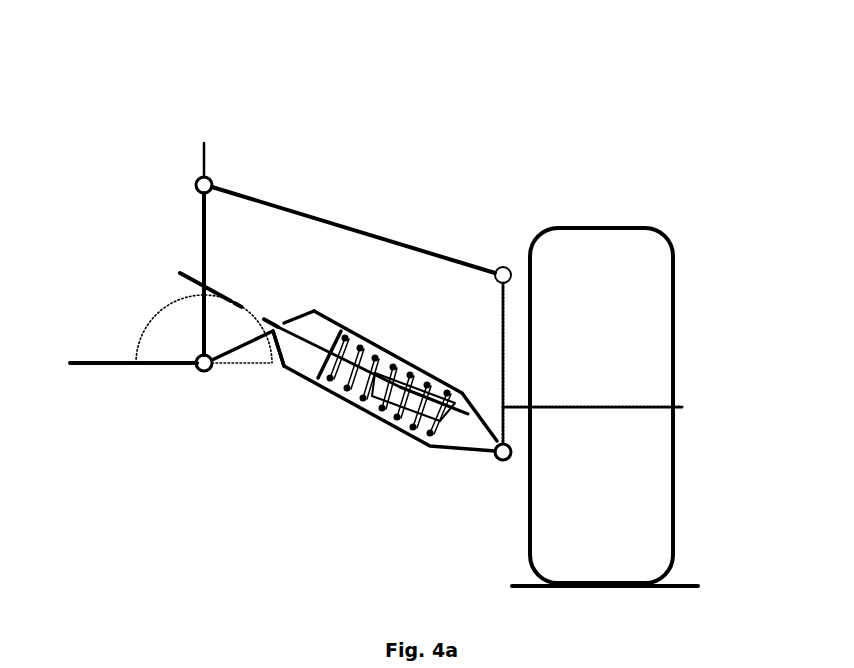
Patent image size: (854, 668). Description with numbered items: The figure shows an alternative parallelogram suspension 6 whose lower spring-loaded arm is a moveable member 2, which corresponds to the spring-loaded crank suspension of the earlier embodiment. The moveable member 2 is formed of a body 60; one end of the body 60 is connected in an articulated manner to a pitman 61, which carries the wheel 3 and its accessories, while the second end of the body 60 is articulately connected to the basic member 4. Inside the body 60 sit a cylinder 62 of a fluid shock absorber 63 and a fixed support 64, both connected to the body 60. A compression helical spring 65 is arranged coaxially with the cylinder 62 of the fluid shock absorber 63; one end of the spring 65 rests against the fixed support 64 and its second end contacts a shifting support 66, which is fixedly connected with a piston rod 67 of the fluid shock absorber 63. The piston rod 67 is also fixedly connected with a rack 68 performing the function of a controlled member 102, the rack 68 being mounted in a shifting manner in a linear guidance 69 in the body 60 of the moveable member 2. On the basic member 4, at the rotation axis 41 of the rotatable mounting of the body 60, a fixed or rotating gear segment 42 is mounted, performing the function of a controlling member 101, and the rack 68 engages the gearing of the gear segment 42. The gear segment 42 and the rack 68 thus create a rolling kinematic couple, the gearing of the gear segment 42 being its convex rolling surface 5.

The moveable member 2 is at (524, 306).
The wheel 3 is at (645, 338).
The basic member 4 is at (122, 367).
The convex rolling surface 5 is at (168, 254).
The parallelogram suspension 6 is at (524, 306).
The rotation axis 41 is at (217, 371).
The gear segment 42 is at (166, 286).
The body 60 is at (524, 306).
The pitman 61 is at (503, 325).
The cylinder 62 is at (447, 436).
The fluid shock absorber 63 is at (484, 452).
The fixed support 64 is at (462, 432).
The compression helical spring 65 is at (346, 334).
The shifting support 66 is at (313, 355).
The piston rod 67 is at (348, 370).
The rack 68 is at (263, 260).
The linear guidance 69 is at (286, 310).
The controlling member 101 is at (183, 323).
The controlled member 102 is at (181, 273).